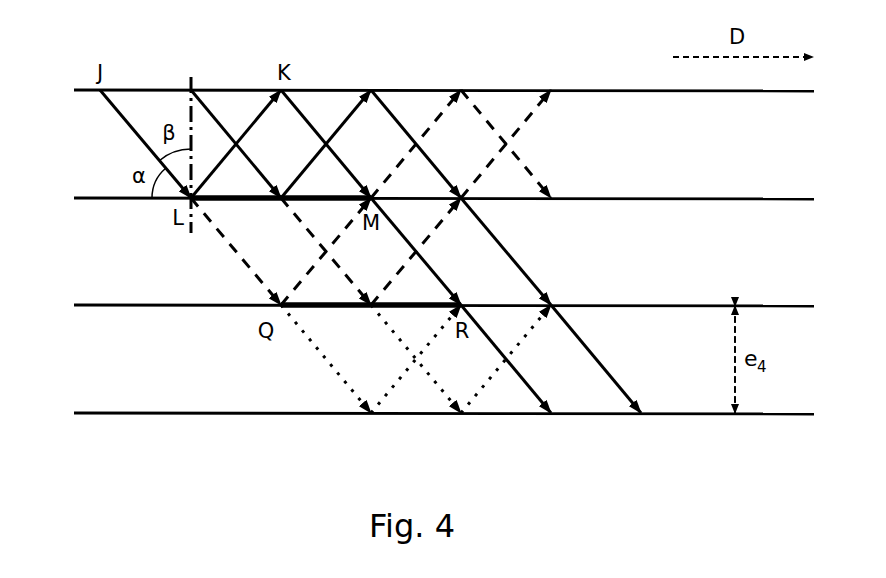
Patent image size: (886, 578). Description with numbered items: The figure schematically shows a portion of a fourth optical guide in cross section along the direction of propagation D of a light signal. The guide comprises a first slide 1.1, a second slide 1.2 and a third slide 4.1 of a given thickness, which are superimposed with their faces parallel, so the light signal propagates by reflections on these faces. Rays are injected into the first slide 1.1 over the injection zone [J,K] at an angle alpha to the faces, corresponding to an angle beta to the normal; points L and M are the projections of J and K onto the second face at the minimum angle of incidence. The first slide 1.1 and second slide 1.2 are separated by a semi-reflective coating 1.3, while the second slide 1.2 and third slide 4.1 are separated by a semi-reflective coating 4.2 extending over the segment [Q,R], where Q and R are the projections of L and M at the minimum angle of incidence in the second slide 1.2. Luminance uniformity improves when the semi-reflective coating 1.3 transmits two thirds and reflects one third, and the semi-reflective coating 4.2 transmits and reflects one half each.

The first slide 1.1 is at (639, 91).
The second slide 1.2 is at (664, 199).
The semi-reflective coating 1.3 is at (250, 202).
The third slide 4.1 is at (156, 414).
The semi-reflective coating 4.2 is at (342, 309).